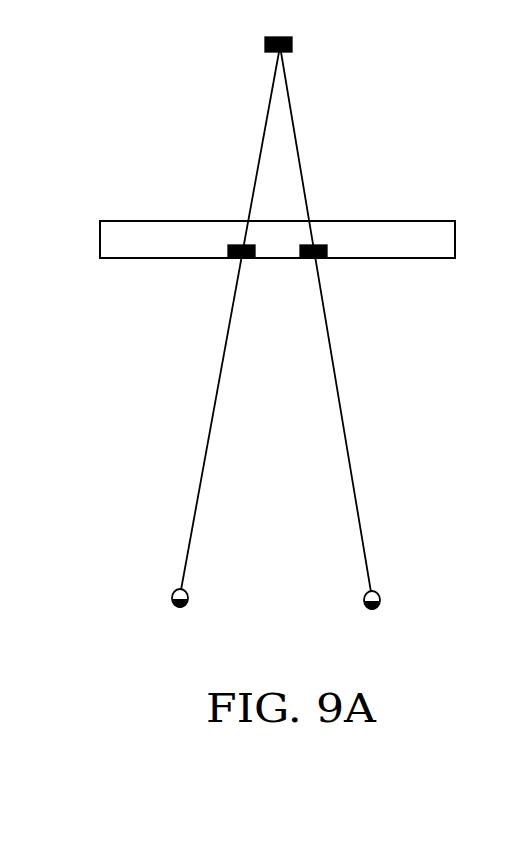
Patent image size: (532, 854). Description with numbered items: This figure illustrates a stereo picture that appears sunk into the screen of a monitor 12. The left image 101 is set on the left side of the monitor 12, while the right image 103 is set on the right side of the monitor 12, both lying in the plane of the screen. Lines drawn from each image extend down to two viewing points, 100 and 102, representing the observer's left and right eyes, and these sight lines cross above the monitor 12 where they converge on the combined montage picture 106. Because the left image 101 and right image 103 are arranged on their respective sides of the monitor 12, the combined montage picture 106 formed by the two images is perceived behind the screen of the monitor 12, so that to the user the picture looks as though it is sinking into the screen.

The monitor 12 is at (455, 243).
The combined montage picture 106 is at (292, 45).
The left image 101 is at (236, 259).
The right image 103 is at (318, 259).
The first detector 100 is at (188, 596).
The second detector 102 is at (380, 595).